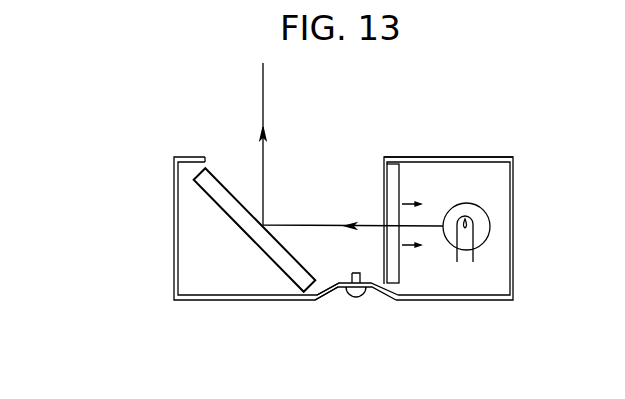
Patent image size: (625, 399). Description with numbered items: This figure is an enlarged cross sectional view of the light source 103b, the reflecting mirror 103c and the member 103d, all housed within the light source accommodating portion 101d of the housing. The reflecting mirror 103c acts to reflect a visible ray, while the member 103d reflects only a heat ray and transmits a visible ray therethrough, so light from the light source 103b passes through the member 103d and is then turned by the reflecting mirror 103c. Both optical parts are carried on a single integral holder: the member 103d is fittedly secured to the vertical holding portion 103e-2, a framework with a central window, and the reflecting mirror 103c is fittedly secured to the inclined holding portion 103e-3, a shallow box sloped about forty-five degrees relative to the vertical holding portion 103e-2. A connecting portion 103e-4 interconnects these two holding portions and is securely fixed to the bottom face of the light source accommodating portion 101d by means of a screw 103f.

The light source accommodating portion 101d is at (492, 157).
The light source 103b is at (484, 221).
The reflecting mirror 103c is at (278, 255).
The member 103d is at (390, 203).
The vertical holding portion 103e-2 is at (392, 155).
The inclined holding portion 103e-3 is at (233, 222).
The connecting portion 103e-4 is at (323, 295).
The screw 103f is at (359, 294).